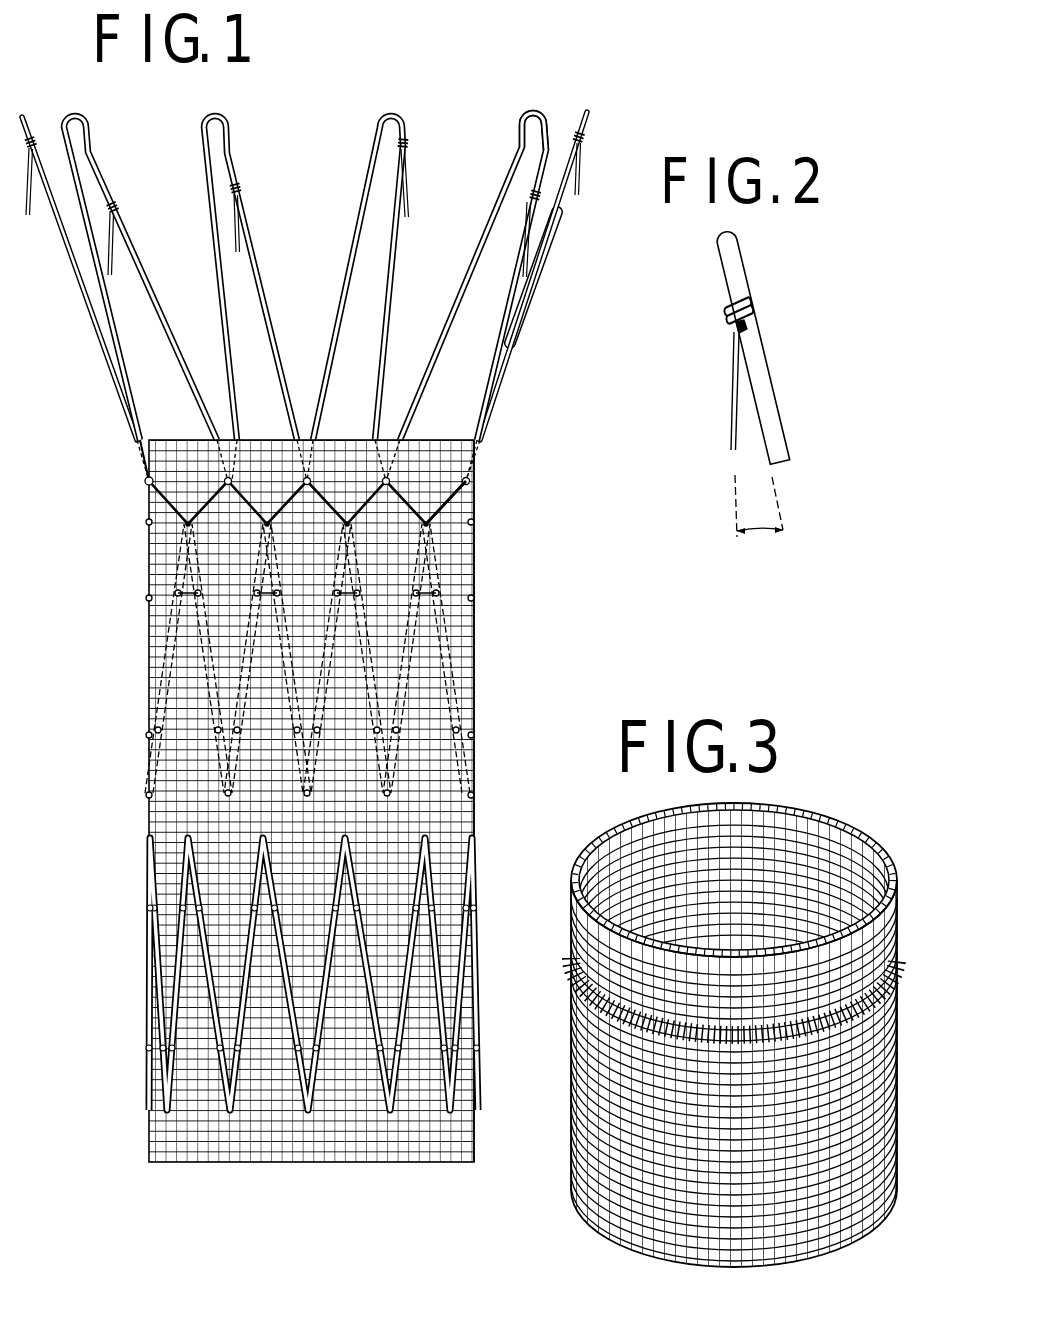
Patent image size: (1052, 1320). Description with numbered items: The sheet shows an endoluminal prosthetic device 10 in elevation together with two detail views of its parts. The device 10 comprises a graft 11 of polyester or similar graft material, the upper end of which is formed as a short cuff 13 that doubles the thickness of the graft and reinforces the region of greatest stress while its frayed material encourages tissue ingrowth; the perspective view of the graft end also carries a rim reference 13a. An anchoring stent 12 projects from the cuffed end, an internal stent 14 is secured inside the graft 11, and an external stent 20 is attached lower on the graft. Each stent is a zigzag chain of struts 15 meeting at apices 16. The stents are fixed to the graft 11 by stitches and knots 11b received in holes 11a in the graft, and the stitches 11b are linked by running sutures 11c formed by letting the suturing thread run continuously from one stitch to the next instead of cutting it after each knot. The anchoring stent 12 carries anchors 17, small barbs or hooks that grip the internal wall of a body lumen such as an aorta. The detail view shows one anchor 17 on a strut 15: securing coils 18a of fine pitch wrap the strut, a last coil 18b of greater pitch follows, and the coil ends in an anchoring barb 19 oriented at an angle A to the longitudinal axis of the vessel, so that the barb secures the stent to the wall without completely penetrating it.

In FIG. 1, the device 10 is at (539, 588).
In FIG. 1, the graft 11 is at (150, 816).
In FIG. 3, the graft 11 is at (900, 1046).
In FIG. 1, the holes 11a is at (147, 478).
In FIG. 1, the stitches 11b is at (147, 487).
In FIG. 1, the running sutures 11c is at (470, 497).
In FIG. 1, the anchoring stent 12 is at (538, 110).
In FIG. 1, the cuff 13 is at (455, 458).
In FIG. 3, the cuff 13 is at (893, 912).
In FIG. 3, the mesh rim 13a is at (898, 985).
In FIG. 1, the internal stent 14 is at (477, 680).
In FIG. 1, the struts 15 is at (453, 300).
In FIG. 2, the struts 15 is at (774, 390).
In FIG. 1, the apices 16 is at (306, 438).
In FIG. 1, the anchors 17 is at (408, 194).
In FIG. 2, the anchors 17 is at (688, 291).
In FIG. 2, the securing coils 18a is at (752, 296).
In FIG. 2, the last coil 18b is at (735, 327).
In FIG. 2, the anchoring barb 19 is at (730, 431).
In FIG. 1, the external stent 20 is at (466, 990).
In FIG. 2, the angle A is at (759, 519).